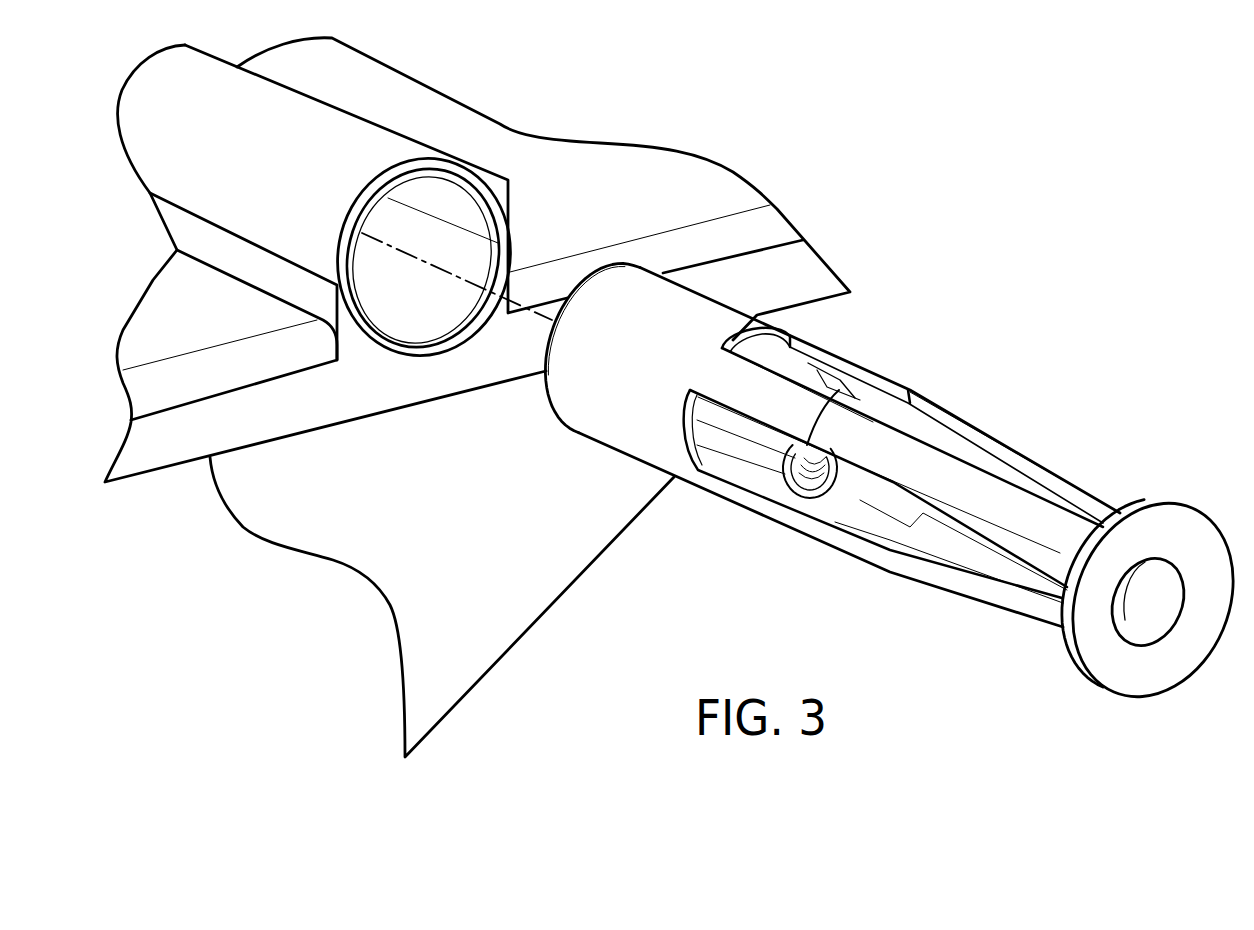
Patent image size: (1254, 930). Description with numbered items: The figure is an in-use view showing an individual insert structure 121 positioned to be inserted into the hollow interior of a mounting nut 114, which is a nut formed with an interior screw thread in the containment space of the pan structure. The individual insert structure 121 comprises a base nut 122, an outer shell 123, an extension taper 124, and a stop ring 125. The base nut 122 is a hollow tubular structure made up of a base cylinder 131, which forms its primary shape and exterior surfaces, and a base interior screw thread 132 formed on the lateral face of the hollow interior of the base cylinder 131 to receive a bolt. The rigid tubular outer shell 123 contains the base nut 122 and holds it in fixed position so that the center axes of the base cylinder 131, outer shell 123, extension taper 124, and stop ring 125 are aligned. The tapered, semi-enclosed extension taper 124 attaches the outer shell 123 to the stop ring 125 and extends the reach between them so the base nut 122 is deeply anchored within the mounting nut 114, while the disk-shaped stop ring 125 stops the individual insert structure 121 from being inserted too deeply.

The mounting nut 114 is at (430, 263).
The individual insert structure 121 is at (899, 470).
The base nut 122 is at (893, 504).
The outer shell 123 is at (690, 323).
The extension taper 124 is at (997, 510).
The stop ring 125 is at (1180, 530).
The base cylinder 131 is at (757, 457).
The base interior screw thread 132 is at (822, 470).